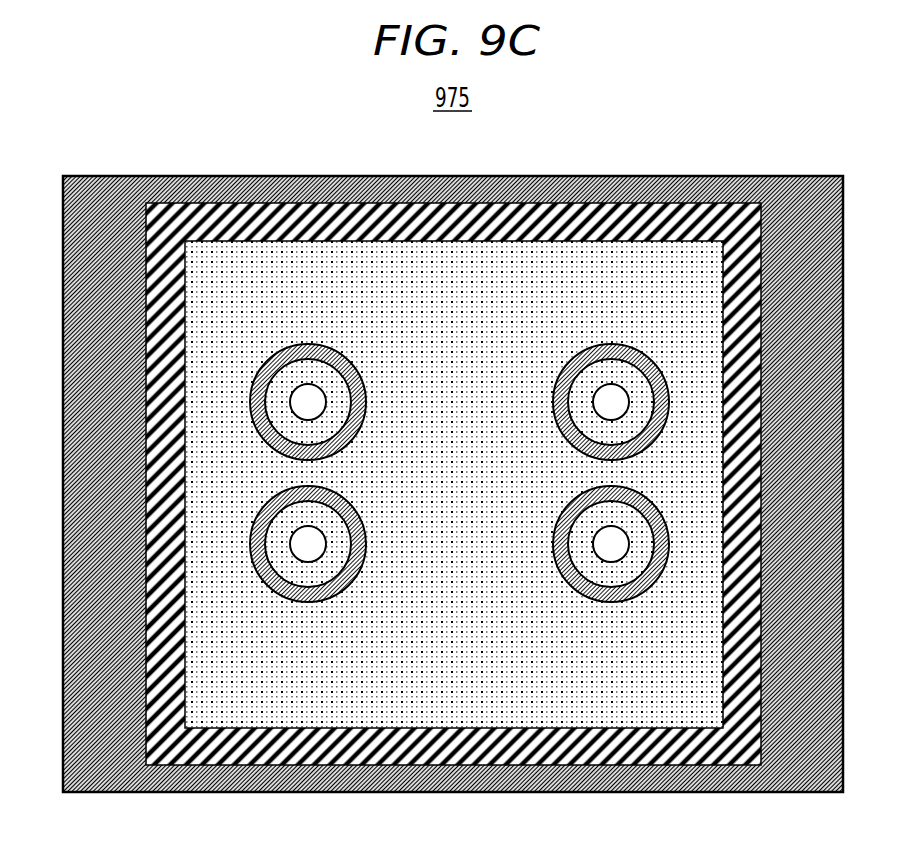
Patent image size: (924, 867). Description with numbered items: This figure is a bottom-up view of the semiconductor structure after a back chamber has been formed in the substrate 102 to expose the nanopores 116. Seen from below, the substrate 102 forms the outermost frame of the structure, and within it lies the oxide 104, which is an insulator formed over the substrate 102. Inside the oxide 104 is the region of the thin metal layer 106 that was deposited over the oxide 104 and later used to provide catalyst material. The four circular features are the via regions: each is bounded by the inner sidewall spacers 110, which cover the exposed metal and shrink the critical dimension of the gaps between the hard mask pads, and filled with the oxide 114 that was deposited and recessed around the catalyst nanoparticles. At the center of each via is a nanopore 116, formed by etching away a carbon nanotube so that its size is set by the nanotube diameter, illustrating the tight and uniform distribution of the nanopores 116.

The substrate 102 is at (750, 176).
The oxide 104 is at (745, 728).
The thin metal layer 106 is at (702, 657).
The inner sidewall spacers 110 is at (670, 544).
The oxide 114 is at (645, 403).
The nanopores 116 is at (607, 381).